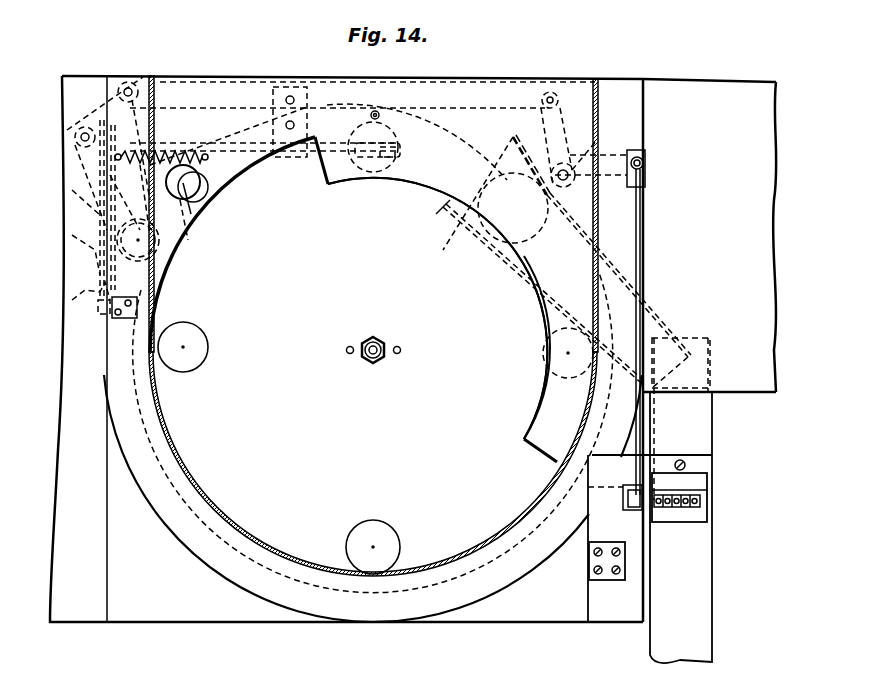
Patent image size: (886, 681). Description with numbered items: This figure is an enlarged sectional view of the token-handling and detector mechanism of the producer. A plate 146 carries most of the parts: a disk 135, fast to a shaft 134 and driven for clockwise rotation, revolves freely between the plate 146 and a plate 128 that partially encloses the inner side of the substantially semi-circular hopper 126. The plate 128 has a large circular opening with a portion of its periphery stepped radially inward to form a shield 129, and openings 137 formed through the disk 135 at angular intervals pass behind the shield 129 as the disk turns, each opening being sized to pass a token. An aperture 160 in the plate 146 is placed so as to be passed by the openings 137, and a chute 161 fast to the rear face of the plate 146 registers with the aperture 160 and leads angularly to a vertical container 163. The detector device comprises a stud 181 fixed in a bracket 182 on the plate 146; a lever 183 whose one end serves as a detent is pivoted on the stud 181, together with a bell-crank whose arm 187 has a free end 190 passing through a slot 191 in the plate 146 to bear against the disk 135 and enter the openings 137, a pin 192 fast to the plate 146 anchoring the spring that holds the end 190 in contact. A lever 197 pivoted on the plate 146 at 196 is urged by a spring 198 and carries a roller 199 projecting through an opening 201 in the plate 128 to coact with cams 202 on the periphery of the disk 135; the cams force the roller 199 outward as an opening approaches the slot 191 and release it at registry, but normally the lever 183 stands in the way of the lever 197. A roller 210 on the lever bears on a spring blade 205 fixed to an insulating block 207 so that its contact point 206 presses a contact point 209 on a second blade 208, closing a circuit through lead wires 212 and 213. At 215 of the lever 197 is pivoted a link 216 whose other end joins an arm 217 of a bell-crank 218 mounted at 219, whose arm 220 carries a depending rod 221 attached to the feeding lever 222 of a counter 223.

The plate 146 is at (88, 84).
The hopper 126 is at (173, 450).
The disk 135 is at (240, 508).
The plate 128 is at (226, 180).
The stud 181 is at (296, 175).
The shield 129 is at (403, 186).
The aperture 160 is at (528, 272).
The chute 161 is at (539, 259).
The openings 137 is at (366, 180).
The shaft 134 is at (375, 364).
The cams 202 is at (212, 133).
The lead wire 212 is at (160, 288).
The bracket 182 is at (306, 85).
The lever 183 is at (252, 160).
The arm 187 is at (359, 145).
The free end 190 is at (398, 158).
The slot 191 is at (398, 147).
The pin 192 is at (380, 110).
The link 216 is at (208, 80).
The pivot 215 is at (150, 78).
The arm 217 is at (571, 105).
The bell-crank 218 is at (590, 142).
The pivot mounting 219 is at (584, 246).
The arm 220 is at (632, 269).
The depending rod 221 is at (641, 265).
The feeding lever 222 is at (632, 497).
The counter 223 is at (697, 517).
The vertical container 163 is at (700, 448).
The spring 198 is at (172, 142).
The roller 199 is at (186, 186).
The opening 201 is at (178, 237).
The pivot 196 is at (160, 262).
The lever 197 is at (72, 190).
The spring blade 205 is at (72, 235).
The contact point 206 is at (82, 160).
The block 207 is at (103, 310).
The spring blade 208 is at (133, 200).
The contact point 209 is at (136, 108).
The roller 210 is at (77, 132).
The lead wire 213 is at (75, 300).